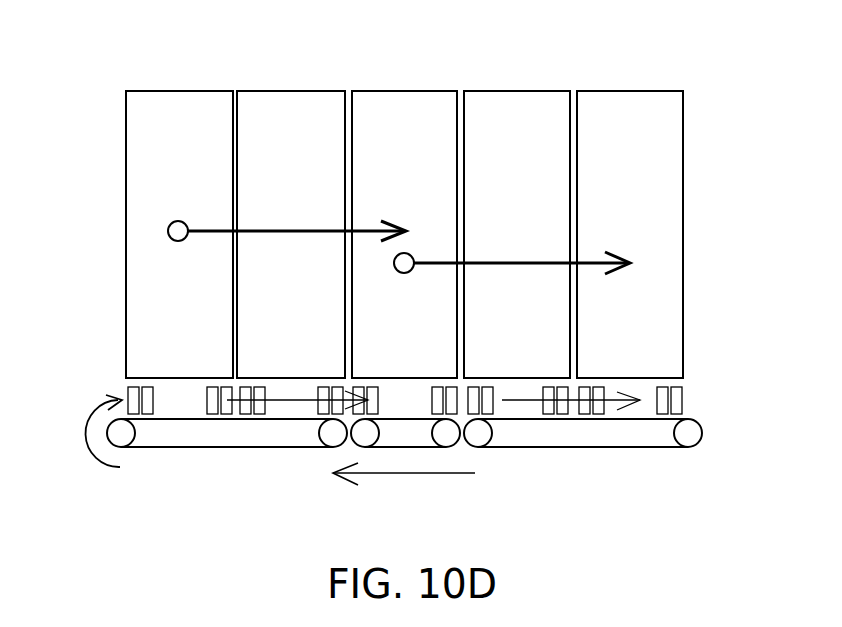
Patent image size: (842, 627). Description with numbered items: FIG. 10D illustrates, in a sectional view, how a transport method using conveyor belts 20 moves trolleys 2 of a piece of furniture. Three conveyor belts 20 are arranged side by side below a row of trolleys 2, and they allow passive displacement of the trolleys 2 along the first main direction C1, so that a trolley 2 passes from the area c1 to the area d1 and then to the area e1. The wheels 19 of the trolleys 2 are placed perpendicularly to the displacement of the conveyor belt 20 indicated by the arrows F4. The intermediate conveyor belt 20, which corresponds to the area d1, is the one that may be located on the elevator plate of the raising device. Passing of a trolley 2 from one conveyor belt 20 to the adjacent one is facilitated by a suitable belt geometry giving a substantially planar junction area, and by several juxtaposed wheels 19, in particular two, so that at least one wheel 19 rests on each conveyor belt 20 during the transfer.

The trolley 2 is at (615, 110).
The wheel 19 is at (684, 400).
The conveyor belt 20 is at (208, 434).
The arrow of displacement of the conveyor belt F4 is at (90, 431).
The first main direction C1 is at (293, 228).
The area c1 is at (177, 207).
The area d1 is at (407, 210).
The area e1 is at (629, 244).